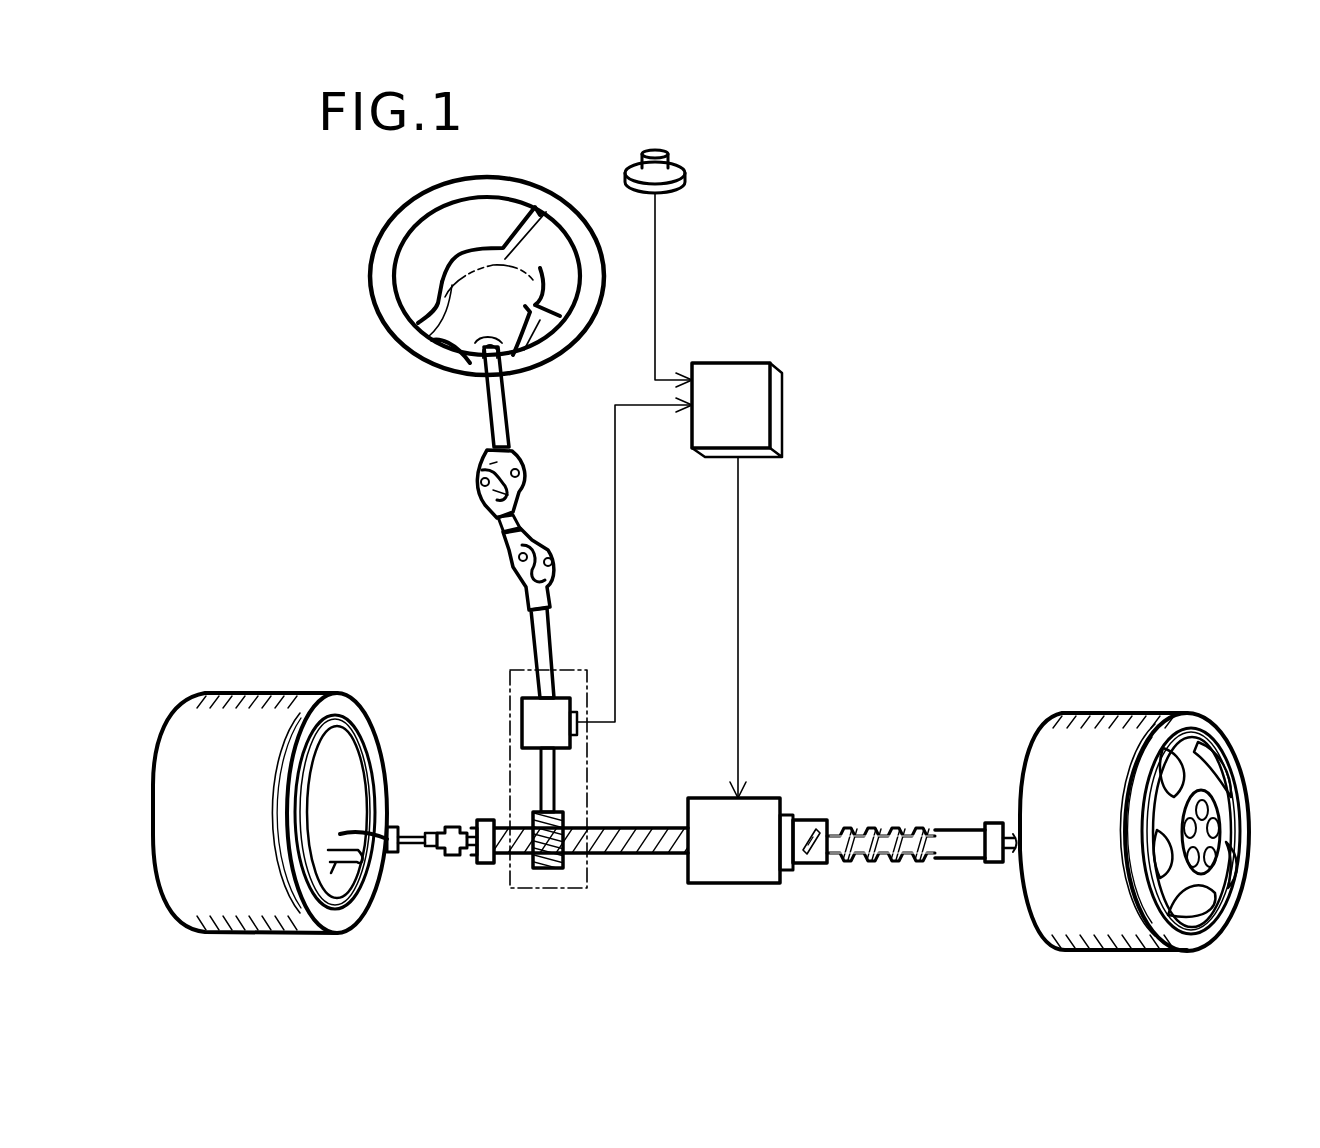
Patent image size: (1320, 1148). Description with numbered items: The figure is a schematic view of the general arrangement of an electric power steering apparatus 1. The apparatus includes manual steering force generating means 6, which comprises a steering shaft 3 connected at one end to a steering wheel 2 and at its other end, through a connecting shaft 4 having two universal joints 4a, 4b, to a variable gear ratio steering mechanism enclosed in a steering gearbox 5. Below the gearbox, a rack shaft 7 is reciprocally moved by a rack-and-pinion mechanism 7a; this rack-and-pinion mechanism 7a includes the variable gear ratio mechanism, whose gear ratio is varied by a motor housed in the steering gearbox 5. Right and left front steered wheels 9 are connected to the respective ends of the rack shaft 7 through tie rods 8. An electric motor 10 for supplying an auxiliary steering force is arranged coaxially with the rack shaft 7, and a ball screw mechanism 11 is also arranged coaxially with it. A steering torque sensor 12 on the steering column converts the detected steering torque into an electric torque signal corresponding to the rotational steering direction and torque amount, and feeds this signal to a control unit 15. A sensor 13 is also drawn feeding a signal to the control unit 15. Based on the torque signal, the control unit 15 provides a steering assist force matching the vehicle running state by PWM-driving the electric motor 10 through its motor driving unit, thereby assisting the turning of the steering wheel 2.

The electric power steering apparatus 1 is at (965, 268).
The steering wheel 2 is at (393, 243).
The steering shaft 3 is at (462, 405).
The connecting shaft 4 is at (544, 493).
The universal joint 4a is at (512, 460).
The universal joint 4b is at (530, 545).
The steering gearbox 5 is at (548, 888).
The manual steering force generating means 6 is at (435, 482).
The rack shaft 7 is at (962, 852).
The rack-and-pinion mechanism 7a is at (563, 818).
The tie rod 8 is at (378, 833).
The front steered wheel 9 is at (232, 695).
The electric motor 10 is at (738, 870).
The ball screw mechanism 11 is at (885, 818).
The steering torque sensor 12 is at (522, 715).
The vehicle speed sensor 13 is at (684, 185).
The control unit 15 is at (731, 362).